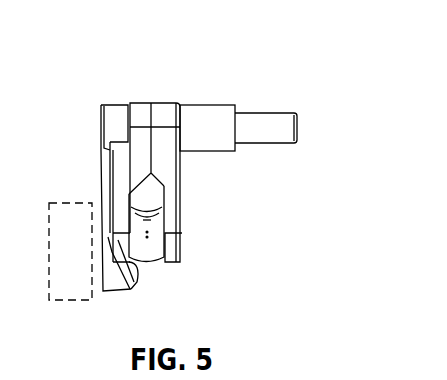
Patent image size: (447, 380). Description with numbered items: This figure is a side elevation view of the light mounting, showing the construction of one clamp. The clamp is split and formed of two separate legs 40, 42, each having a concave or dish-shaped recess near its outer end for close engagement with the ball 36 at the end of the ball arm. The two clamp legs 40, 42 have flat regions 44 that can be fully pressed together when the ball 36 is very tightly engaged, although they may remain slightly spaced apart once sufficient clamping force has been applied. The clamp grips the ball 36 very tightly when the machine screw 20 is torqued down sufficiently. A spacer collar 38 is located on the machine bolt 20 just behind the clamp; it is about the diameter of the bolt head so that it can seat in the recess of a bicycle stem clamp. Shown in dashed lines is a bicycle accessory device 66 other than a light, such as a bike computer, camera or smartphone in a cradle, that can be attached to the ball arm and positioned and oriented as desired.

The machine screw 20 is at (115, 113).
The ball 36 is at (150, 243).
The spacer collar 38 is at (213, 117).
The clamp leg 40 is at (122, 174).
The clamp leg 42 is at (180, 183).
The flat region 44 is at (155, 124).
The bicycle accessory device 66 is at (71, 300).